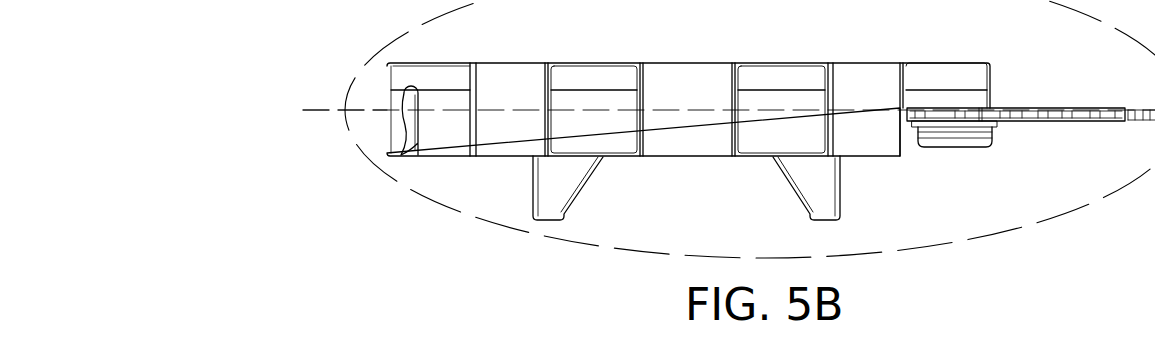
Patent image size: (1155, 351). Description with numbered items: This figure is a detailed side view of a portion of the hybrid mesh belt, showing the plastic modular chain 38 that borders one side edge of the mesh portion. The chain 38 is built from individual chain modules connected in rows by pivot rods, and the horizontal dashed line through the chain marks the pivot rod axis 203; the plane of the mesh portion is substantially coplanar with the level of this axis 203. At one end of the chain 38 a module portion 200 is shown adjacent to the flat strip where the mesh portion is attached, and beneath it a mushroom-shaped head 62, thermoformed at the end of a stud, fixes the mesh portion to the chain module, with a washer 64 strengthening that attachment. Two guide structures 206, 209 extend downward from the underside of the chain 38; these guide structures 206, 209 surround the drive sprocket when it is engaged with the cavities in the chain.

The chain 38 is at (432, 62).
The end pocket 200 is at (932, 70).
The pivot rod axis 203 is at (323, 112).
The guide structure 206 is at (553, 213).
The guide structure 209 is at (830, 213).
The mushroom-shaped head 62 is at (962, 142).
The washer 64 is at (996, 123).